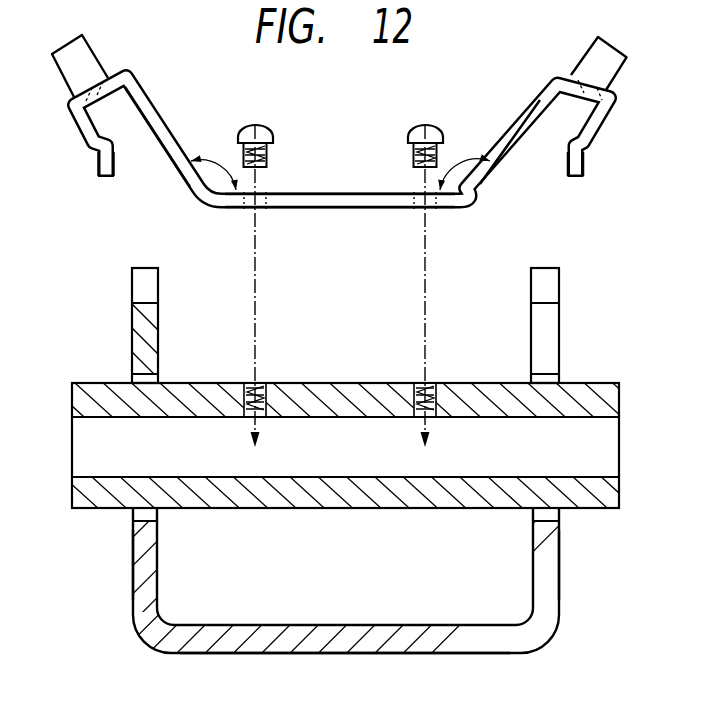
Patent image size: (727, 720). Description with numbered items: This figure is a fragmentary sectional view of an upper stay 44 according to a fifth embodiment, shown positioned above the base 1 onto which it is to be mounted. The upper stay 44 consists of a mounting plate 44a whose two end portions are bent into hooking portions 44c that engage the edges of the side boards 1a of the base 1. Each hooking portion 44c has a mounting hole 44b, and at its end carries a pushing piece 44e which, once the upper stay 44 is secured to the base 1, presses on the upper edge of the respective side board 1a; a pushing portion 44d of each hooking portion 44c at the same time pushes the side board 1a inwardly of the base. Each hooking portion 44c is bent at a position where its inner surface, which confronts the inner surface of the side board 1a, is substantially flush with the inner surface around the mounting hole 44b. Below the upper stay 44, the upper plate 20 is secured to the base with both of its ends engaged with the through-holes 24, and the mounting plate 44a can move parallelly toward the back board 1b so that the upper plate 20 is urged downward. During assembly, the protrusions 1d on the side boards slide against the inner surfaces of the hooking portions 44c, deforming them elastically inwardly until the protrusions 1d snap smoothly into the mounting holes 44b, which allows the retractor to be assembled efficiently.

The base 1 is at (313, 581).
The side boards 1a is at (134, 560).
The back board 1b is at (190, 653).
The protrusions 1d is at (140, 324).
The upper plate 20 is at (303, 520).
The through-holes 24 is at (158, 512).
The upper stay 44 is at (352, 121).
The mounting plate 44a is at (354, 189).
The mounting holes 44b is at (95, 90).
The hooking portions 44c is at (160, 119).
The pushing portions 44d is at (95, 160).
The pushing pieces 44e is at (100, 58).